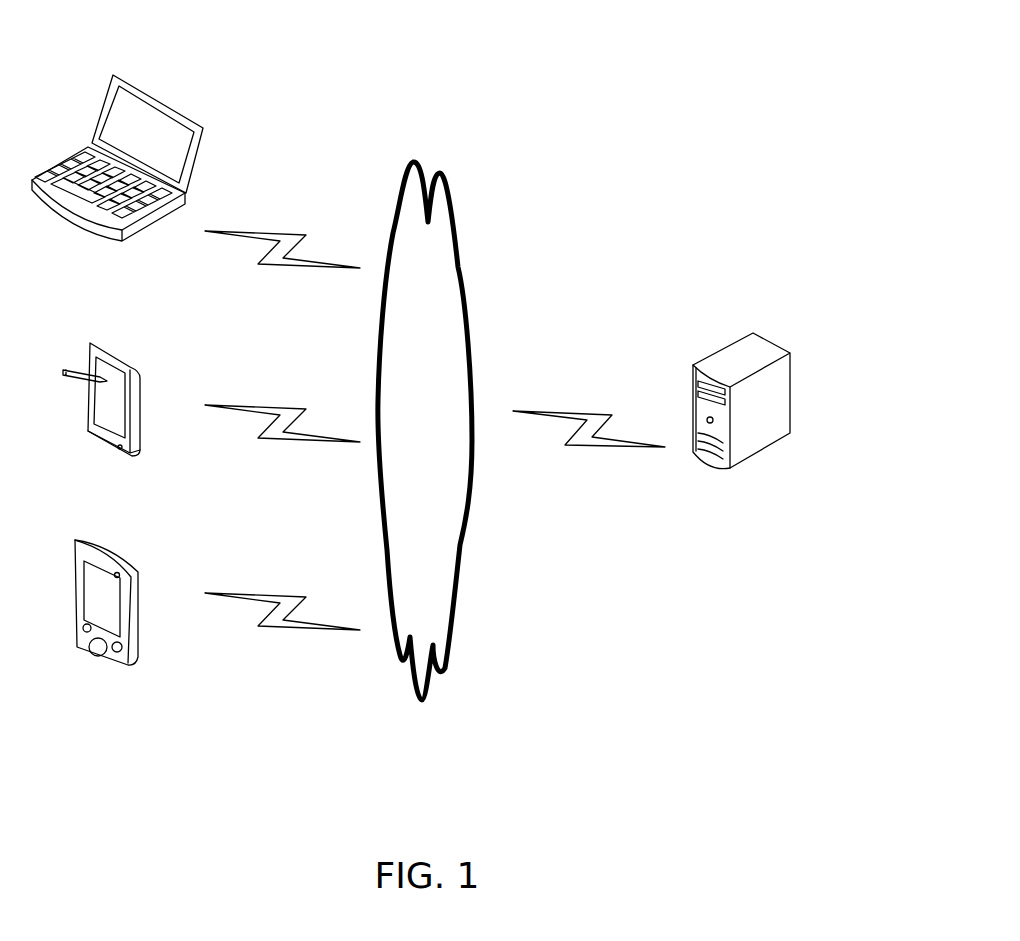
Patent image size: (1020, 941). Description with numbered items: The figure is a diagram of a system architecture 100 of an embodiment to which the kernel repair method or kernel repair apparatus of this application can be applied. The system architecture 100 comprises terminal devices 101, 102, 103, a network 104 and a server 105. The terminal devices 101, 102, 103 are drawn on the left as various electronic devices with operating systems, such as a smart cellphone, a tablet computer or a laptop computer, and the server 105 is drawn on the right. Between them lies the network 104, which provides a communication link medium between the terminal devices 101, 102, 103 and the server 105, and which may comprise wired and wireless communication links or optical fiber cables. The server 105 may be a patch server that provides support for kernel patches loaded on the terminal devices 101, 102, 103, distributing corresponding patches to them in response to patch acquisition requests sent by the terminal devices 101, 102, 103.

The system architecture 100 is at (693, 63).
The terminal device 101 is at (106, 626).
The terminal device 102 is at (101, 420).
The terminal device 103 is at (117, 181).
The network 104 is at (425, 431).
The server 105 is at (741, 426).